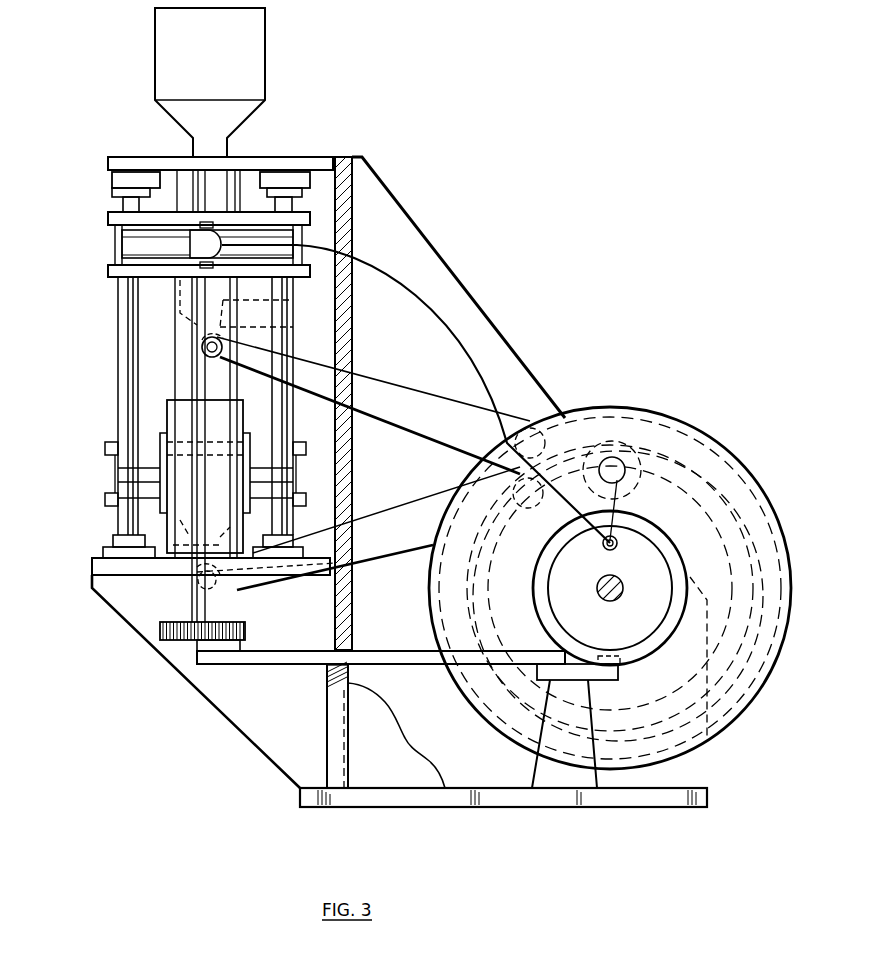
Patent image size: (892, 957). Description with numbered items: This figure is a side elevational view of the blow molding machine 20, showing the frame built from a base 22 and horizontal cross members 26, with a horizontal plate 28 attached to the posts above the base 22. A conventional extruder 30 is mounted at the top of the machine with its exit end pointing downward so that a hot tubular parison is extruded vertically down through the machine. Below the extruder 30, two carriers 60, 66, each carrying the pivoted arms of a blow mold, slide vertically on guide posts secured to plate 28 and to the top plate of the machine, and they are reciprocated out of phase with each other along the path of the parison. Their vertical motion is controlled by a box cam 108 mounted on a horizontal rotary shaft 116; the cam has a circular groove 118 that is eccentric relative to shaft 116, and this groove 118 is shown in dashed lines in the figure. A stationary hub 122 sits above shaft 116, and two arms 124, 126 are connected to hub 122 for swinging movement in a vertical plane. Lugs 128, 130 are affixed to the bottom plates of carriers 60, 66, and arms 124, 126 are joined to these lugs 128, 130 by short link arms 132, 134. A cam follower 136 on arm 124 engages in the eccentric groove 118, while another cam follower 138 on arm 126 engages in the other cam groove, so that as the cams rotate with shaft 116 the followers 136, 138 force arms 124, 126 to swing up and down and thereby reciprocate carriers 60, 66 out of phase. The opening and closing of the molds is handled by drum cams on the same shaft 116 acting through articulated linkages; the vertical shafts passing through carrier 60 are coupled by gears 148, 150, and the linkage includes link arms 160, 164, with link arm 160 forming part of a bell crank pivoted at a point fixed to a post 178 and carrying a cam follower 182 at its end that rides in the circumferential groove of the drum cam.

The blow molding machine 20 is at (420, 206).
The base 22 is at (618, 800).
The horizontal cross members 26 is at (291, 163).
The horizontal plate 28 is at (95, 567).
The extruder 30 is at (257, 40).
The carrier 60 is at (104, 208).
The carrier 66 is at (110, 440).
The box cam 108 is at (683, 423).
The horizontal rotary shaft 116 is at (617, 582).
The circular groove 118 is at (740, 491).
The stationary hub 122 is at (622, 481).
The arm 124 is at (410, 388).
The arm 126 is at (367, 547).
The lug 128 is at (292, 304).
The lug 130 is at (160, 513).
The link arm 132 is at (222, 336).
The link arm 134 is at (190, 592).
The cam follower 136 is at (530, 428).
The cam follower 138 is at (526, 508).
The gear 148 is at (245, 633).
The gear 150 is at (160, 632).
The link arm 160 is at (598, 680).
The link arm 164 is at (378, 652).
The post 178 is at (545, 765).
The cam follower 182 is at (620, 665).